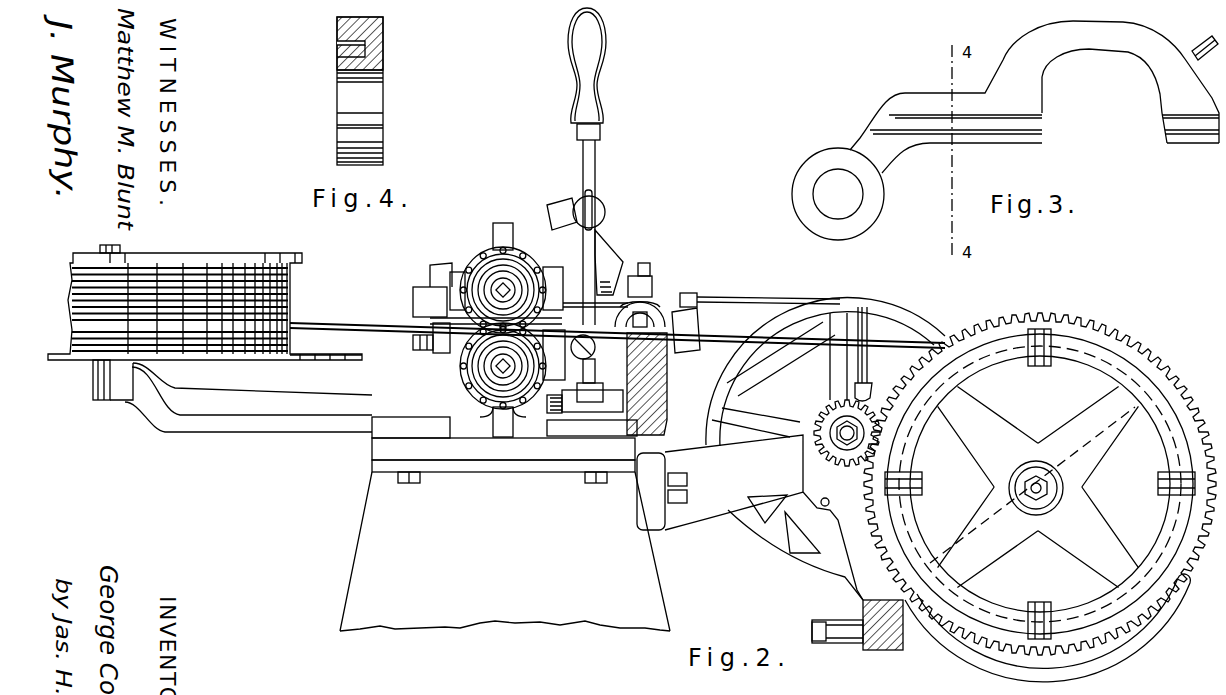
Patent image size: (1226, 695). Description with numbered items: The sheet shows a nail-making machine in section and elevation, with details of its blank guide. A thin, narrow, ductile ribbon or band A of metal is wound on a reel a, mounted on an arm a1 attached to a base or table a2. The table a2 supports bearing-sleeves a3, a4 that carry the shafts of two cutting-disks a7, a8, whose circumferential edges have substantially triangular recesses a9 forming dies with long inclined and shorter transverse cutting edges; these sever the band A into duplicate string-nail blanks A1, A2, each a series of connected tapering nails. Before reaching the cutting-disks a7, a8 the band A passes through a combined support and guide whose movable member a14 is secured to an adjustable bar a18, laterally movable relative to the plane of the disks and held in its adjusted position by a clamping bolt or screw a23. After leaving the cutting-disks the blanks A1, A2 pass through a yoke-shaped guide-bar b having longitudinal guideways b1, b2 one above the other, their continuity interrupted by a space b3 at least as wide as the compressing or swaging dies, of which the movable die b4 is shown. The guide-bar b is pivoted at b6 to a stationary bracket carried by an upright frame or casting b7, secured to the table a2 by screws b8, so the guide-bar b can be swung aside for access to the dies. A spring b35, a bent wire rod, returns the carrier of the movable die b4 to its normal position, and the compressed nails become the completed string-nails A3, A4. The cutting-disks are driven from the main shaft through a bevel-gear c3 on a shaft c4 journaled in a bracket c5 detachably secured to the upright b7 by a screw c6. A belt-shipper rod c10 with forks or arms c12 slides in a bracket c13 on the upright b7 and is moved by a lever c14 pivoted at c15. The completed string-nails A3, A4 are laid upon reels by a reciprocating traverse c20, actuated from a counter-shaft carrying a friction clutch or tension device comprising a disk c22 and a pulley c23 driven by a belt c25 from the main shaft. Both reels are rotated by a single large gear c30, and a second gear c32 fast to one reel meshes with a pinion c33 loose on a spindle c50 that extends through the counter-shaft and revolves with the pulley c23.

In FIG. 2, the ribbon or band A is at (617, 327).
In FIG. 2, the string-nail blank A1 is at (585, 295).
In FIG. 2, the string-nail blank A2 is at (555, 356).
In FIG. 2, the completed string-nail A3 is at (740, 315).
In FIG. 2, the completed string-nail A4 is at (718, 350).
In FIG. 2, the reel a is at (205, 322).
In FIG. 2, the arm a1 is at (241, 414).
In FIG. 2, the base or table a2 is at (440, 450).
In FIG. 2, the bearing-sleeve a3 is at (483, 395).
In FIG. 2, the bearing-sleeve a4 is at (486, 262).
In FIG. 2, the cutting-disk a7 is at (478, 380).
In FIG. 2, the cutting-disk a8 is at (468, 268).
In FIG. 2, the triangular recesses a9 is at (521, 262).
In FIG. 2, the movable member a14 is at (440, 305).
In FIG. 2, the bar a18 is at (434, 352).
In FIG. 2, the clamping bolt or screw a23 is at (416, 344).
In FIG. 4, the guide-bar b is at (383, 97).
In FIG. 3, the guide-bar b is at (921, 93).
In FIG. 2, the guide-bar b is at (650, 312).
In FIG. 4, the longitudinal slot or guideway b1 is at (337, 43).
In FIG. 3, the longitudinal slot or guideway b1 is at (903, 113).
In FIG. 4, the longitudinal slot or guideway b2 is at (337, 60).
In FIG. 3, the longitudinal slot or guideway b2 is at (925, 136).
In FIG. 3, the space b3 is at (1098, 118).
In FIG. 2, the movable compressing or swaging die b4 is at (661, 305).
In FIG. 2, the pivot b6 is at (595, 347).
In FIG. 2, the upright frame or casting b7 is at (660, 394).
In FIG. 2, the screws b8 is at (583, 413).
In FIG. 2, the spring b35 is at (646, 263).
In FIG. 2, the bevel-gear c3 is at (610, 288).
In FIG. 2, the shaft c4 is at (416, 301).
In FIG. 2, the frame or bracket c5 is at (430, 283).
In FIG. 2, the screw c6 is at (690, 295).
In FIG. 2, the belt-shipper rod c10 is at (592, 213).
In FIG. 2, the forks or arms c12 is at (573, 215).
In FIG. 2, the bracket or arm c13 is at (603, 243).
In FIG. 2, the lever c14 is at (596, 172).
In FIG. 2, the pivot c15 is at (560, 407).
In FIG. 2, the reciprocating traverse c20 is at (868, 386).
In FIG. 2, the disk c22 is at (813, 430).
In FIG. 2, the pulley c23 is at (833, 302).
In FIG. 2, the belt c25 is at (786, 299).
In FIG. 2, the large gear c30 is at (975, 325).
In FIG. 2, the second gear c32 is at (1060, 333).
In FIG. 2, the pinion c33 is at (820, 411).
In FIG. 2, the second shaft or spindle c50 is at (846, 441).